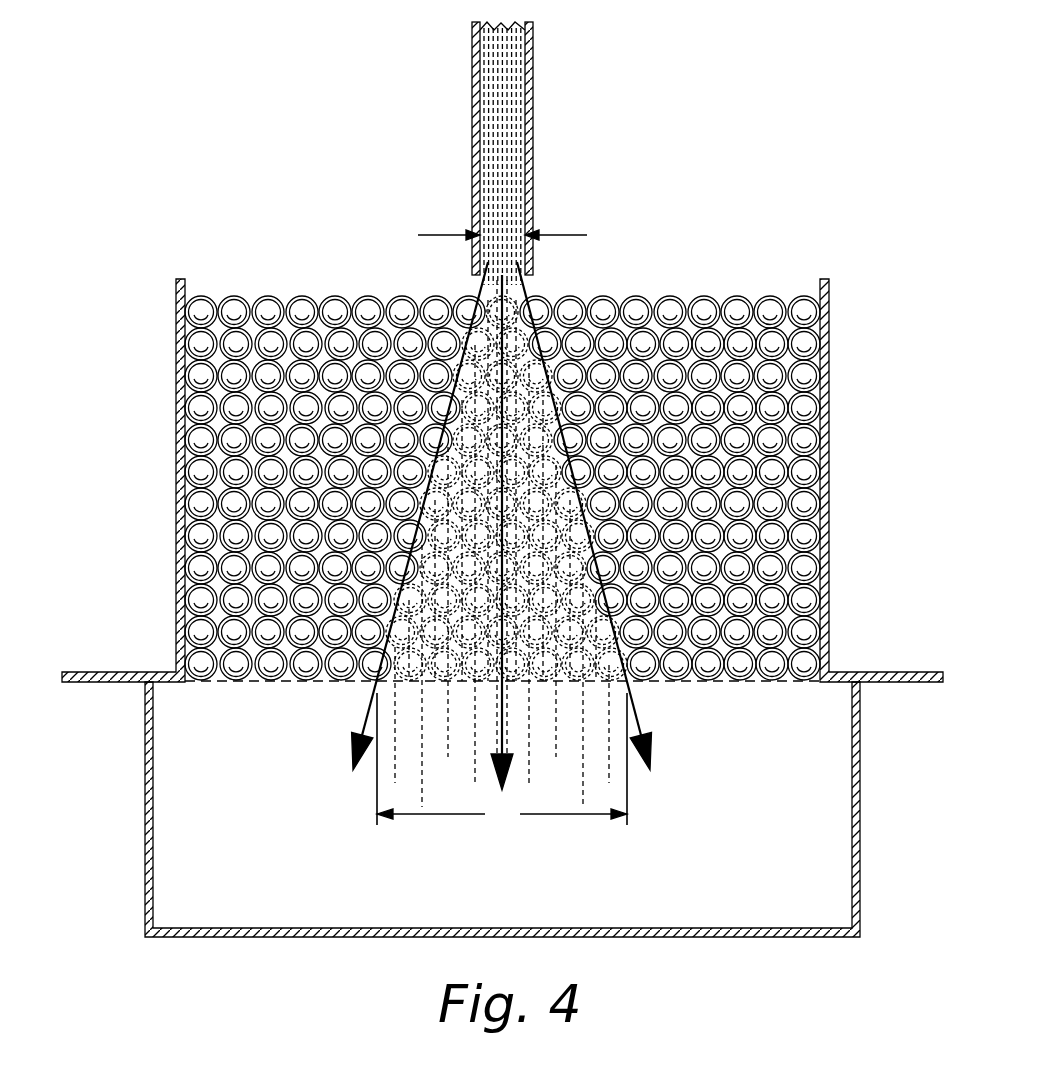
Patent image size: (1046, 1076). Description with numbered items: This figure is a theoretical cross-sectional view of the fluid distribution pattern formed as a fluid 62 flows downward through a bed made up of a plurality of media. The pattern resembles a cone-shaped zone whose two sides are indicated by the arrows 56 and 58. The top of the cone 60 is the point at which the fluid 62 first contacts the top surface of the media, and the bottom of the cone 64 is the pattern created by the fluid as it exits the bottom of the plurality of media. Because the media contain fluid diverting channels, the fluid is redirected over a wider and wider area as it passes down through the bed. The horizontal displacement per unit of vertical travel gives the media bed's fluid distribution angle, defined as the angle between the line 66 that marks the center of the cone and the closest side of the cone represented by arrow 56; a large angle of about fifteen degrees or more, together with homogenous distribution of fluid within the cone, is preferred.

The arrow 56 is at (368, 708).
The arrow 58 is at (638, 708).
The top of the cone 60 is at (512, 232).
The fluid 62 is at (490, 133).
The bottom of the cone 64 is at (502, 761).
The line 66 is at (500, 737).